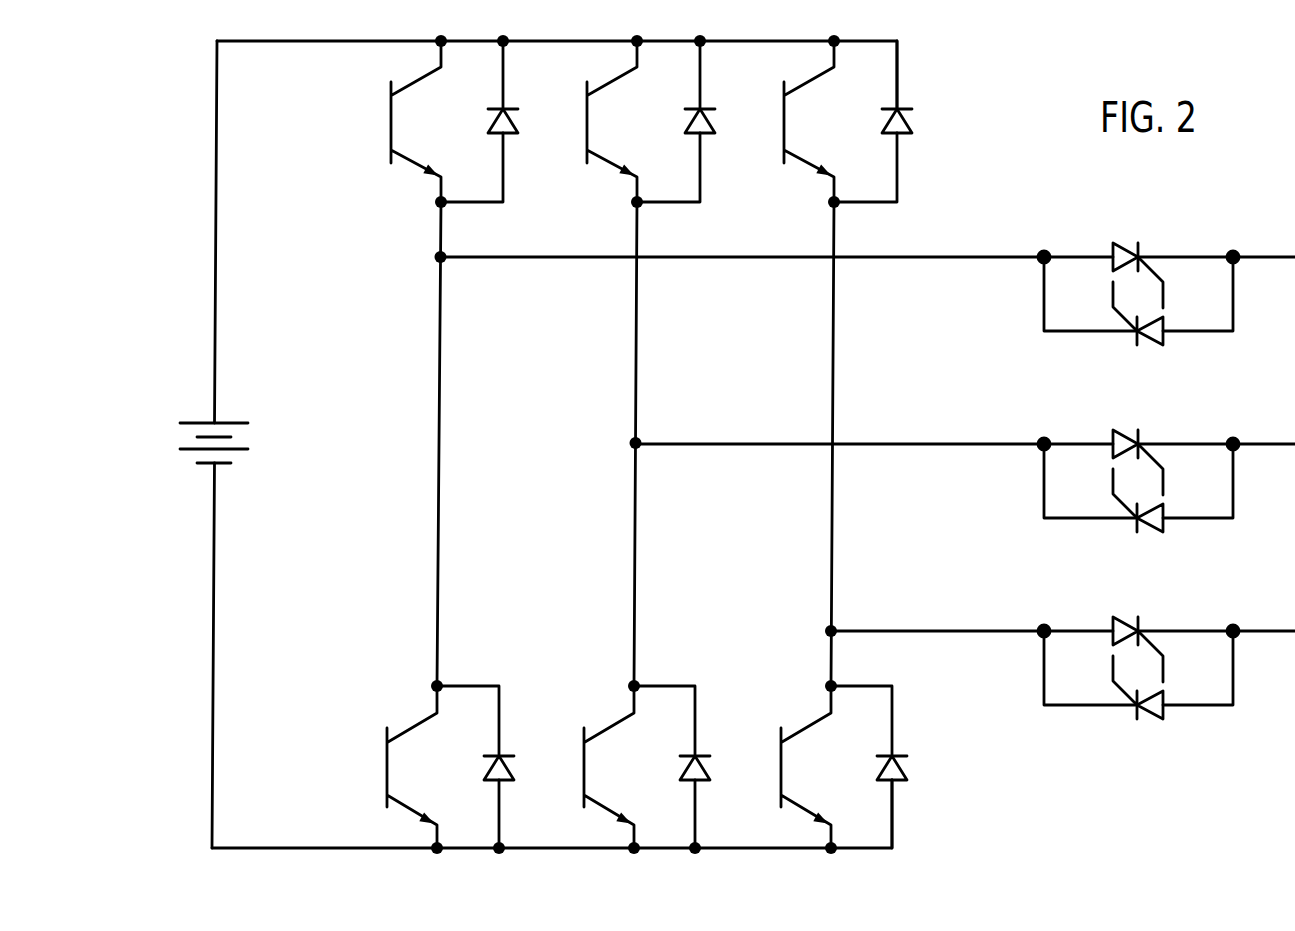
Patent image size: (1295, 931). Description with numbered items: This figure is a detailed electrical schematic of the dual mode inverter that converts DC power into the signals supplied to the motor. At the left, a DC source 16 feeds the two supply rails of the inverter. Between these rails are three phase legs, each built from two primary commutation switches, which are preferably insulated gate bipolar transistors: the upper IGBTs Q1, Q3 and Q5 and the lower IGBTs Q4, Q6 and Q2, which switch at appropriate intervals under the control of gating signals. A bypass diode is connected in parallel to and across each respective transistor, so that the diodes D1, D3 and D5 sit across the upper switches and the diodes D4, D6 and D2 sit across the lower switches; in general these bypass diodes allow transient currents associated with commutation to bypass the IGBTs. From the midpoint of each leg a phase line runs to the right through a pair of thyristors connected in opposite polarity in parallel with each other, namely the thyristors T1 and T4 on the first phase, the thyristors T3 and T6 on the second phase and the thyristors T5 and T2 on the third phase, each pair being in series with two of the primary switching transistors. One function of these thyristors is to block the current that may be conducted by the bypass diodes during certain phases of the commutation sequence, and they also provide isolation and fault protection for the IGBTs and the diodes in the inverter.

The source 16 is at (214, 423).
The IGBT Q1 is at (394, 121).
The IGBT Q2 is at (784, 767).
The IGBT Q3 is at (590, 121).
The IGBT Q4 is at (390, 767).
The IGBT Q5 is at (787, 121).
The IGBT Q6 is at (587, 767).
The bypass diode D1 is at (499, 121).
The bypass diode D2 is at (886, 767).
The bypass diode D3 is at (696, 121).
The bypass diode D4 is at (493, 767).
The bypass diode D5 is at (893, 121).
The bypass diode D6 is at (689, 767).
The thyristor T1 is at (1120, 259).
The thyristor T2 is at (1120, 686).
The thyristor T3 is at (1120, 446).
The thyristor T4 is at (1120, 312).
The thyristor T5 is at (1120, 633).
The thyristor T6 is at (1120, 499).